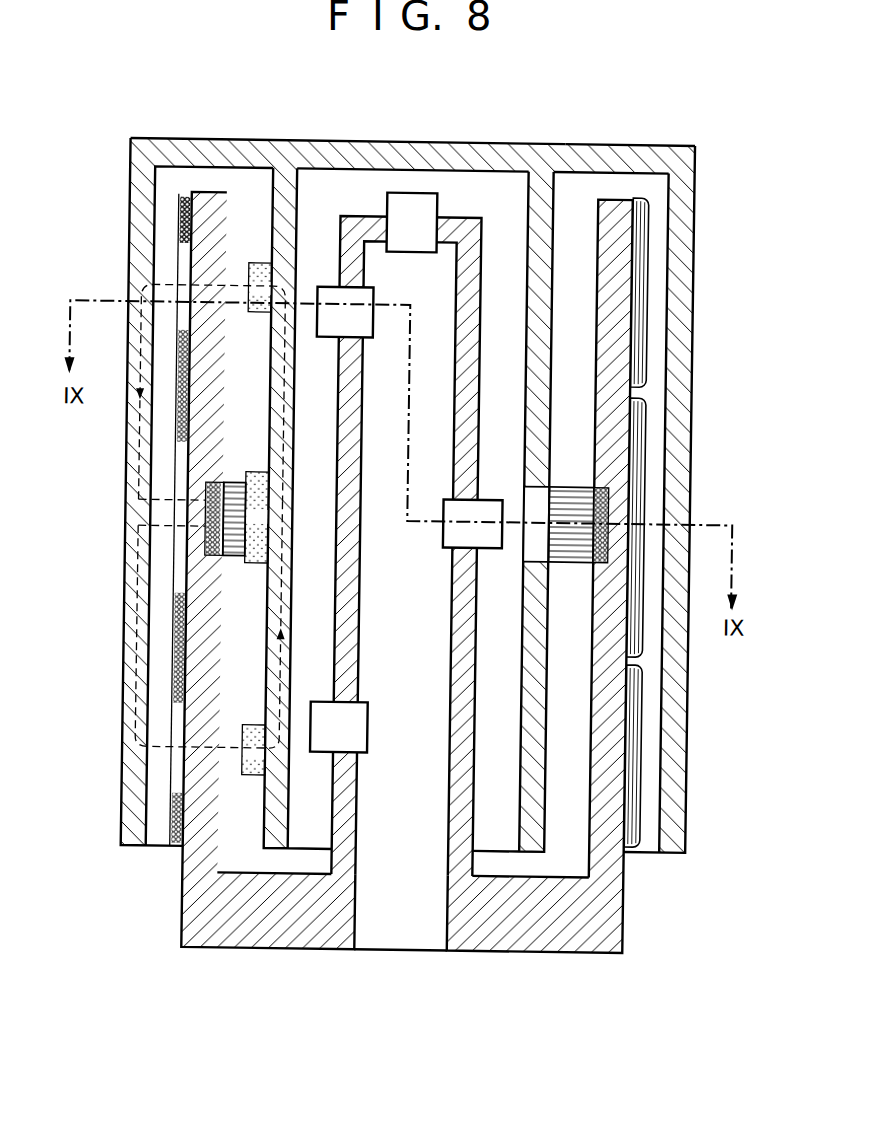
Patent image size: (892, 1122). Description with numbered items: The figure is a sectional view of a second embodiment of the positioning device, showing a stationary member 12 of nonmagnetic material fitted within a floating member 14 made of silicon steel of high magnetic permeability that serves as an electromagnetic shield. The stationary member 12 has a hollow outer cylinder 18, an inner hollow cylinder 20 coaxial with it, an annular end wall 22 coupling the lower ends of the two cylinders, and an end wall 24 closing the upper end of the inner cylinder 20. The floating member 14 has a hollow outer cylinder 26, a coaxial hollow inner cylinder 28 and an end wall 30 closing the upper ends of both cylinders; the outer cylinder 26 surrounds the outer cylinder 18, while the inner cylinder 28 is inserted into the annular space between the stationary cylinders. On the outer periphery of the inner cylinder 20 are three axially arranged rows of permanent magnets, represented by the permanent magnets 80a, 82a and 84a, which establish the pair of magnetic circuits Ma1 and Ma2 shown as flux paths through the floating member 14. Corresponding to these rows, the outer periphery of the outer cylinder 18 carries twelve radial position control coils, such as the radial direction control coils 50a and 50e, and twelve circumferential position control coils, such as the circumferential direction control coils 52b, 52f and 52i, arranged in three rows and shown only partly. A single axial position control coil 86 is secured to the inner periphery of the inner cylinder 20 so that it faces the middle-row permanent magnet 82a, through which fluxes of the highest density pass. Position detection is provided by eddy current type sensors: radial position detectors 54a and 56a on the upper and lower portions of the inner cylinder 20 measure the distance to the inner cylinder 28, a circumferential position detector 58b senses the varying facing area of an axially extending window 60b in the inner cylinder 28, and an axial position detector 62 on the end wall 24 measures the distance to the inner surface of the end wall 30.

The stationary member 12 is at (607, 907).
The floating member 14 is at (457, 143).
The hollow outer cylinder 18 is at (594, 383).
The inner hollow cylinder 20 is at (455, 412).
The annular end wall 22 is at (511, 936).
The end wall 24 is at (443, 240).
The hollow outer cylinder 26 is at (678, 376).
The hollow inner cylinder 28 is at (529, 266).
The end wall 30 is at (627, 142).
The radial direction control coil 50a is at (178, 198).
The radial direction control coil 50e is at (171, 421).
The circumferential direction control coil 52b is at (630, 264).
The circumferential direction control coil 52f is at (632, 451).
The circumferential direction control coil 52i is at (648, 764).
The radial position detector 54a is at (366, 331).
The radial position detector 56a is at (363, 723).
The circumferential position detector 58b is at (447, 540).
The axially extending window 60b is at (532, 507).
The axial position detector 62 is at (423, 208).
The permanent magnet 80a is at (258, 265).
The permanent magnet 82a is at (252, 479).
The permanent magnet 84a is at (256, 732).
The axial position control coil 86 is at (237, 550).
The magnetic circuit Ma1 is at (124, 289).
The magnetic circuit Ma2 is at (138, 571).